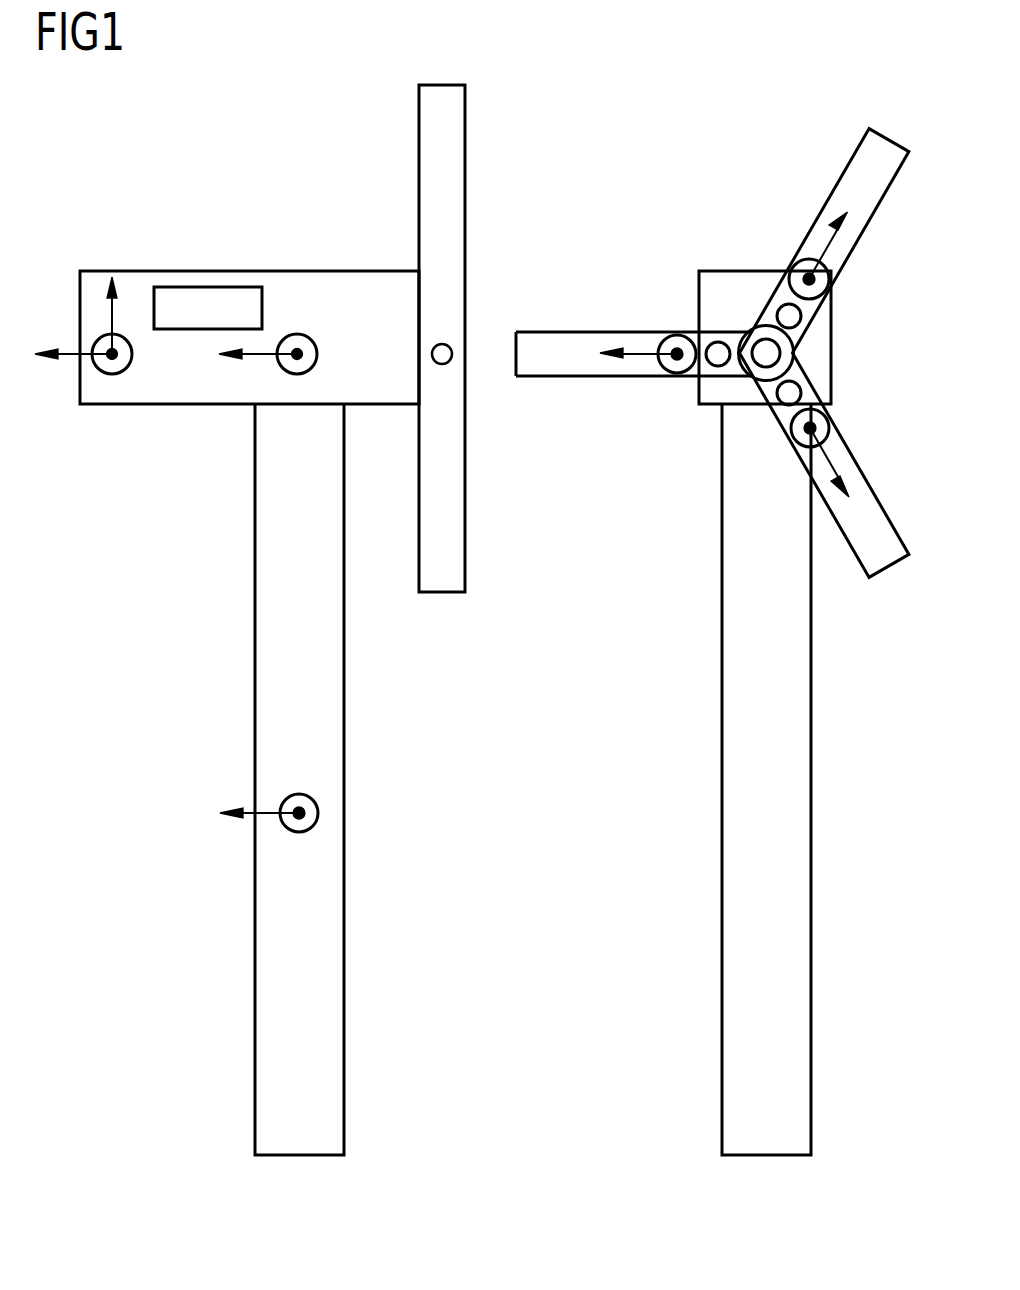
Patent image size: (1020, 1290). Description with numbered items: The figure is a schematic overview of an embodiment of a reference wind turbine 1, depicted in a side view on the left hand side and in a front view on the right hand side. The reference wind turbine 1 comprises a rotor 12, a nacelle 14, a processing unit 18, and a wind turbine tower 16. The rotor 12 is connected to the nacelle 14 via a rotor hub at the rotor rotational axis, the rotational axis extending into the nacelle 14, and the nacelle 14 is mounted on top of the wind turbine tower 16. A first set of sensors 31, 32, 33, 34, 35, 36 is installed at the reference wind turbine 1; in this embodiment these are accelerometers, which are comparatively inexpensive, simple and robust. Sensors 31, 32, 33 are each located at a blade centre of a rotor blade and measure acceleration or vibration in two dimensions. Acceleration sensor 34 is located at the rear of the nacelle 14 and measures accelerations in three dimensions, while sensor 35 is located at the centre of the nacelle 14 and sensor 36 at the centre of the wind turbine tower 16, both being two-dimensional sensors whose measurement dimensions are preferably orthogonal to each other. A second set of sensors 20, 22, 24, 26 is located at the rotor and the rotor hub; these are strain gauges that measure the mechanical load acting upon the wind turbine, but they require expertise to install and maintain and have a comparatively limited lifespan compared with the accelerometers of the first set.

The reference wind turbine 1 is at (250, 136).
The rotor 12 is at (455, 124).
The nacelle 14 is at (333, 282).
The wind turbine tower 16 is at (333, 1007).
The processing unit 18 is at (205, 297).
The strain gauge sensor 20 is at (443, 357).
The strain gauge sensor 22 is at (802, 317).
The strain gauge sensor 24 is at (718, 366).
The strain gauge sensor 26 is at (802, 393).
The acceleration sensor 31 is at (800, 274).
The acceleration sensor 32 is at (827, 425).
The acceleration sensor 33 is at (677, 373).
The acceleration sensor 34 is at (132, 354).
The acceleration sensor 35 is at (317, 354).
The acceleration sensor 36 is at (300, 796).